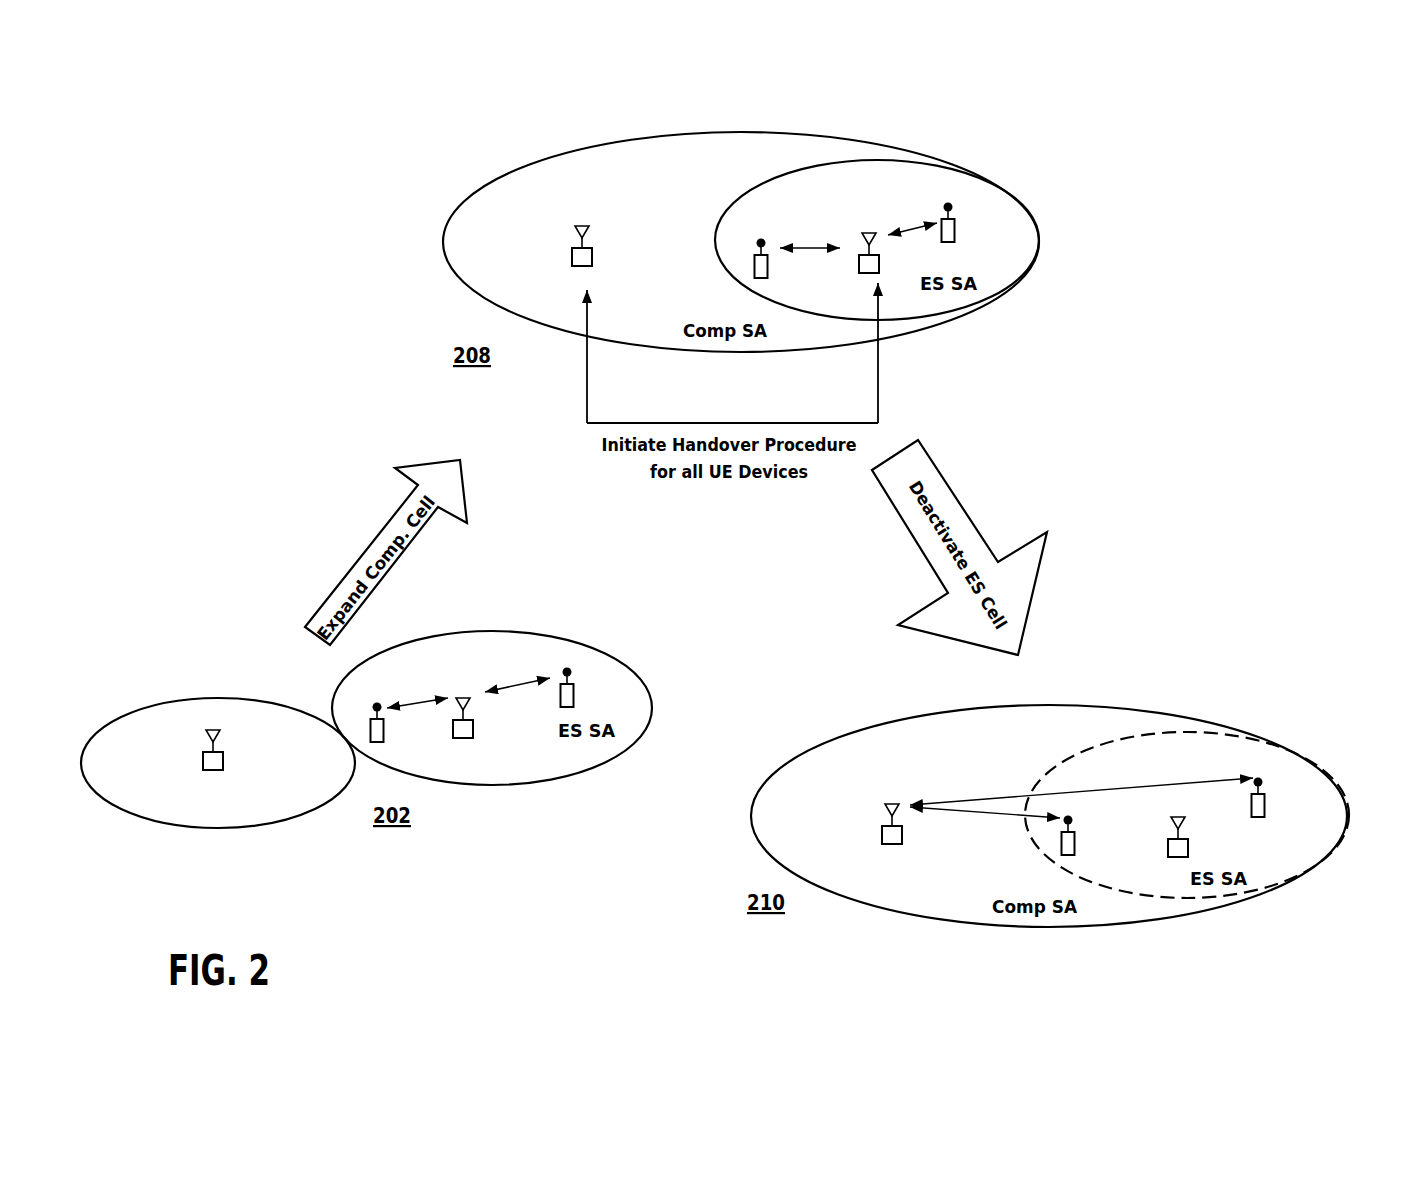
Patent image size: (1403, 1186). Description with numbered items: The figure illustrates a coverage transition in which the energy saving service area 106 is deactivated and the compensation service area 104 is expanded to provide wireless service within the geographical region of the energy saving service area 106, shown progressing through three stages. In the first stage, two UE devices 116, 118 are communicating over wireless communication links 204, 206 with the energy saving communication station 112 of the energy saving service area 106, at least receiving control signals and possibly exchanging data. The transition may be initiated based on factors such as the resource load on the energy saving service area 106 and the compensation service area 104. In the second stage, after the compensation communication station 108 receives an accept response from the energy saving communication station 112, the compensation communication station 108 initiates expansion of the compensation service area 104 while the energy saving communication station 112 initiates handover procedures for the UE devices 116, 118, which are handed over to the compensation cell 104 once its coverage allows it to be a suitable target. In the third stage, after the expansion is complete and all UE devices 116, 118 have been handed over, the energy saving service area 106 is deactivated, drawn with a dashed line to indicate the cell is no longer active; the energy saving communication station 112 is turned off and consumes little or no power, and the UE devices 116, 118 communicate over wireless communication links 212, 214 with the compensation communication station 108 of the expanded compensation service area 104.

The compensation service area 104 is at (470, 194).
The energy saving service area 106 is at (864, 157).
The compensation communication station 108 is at (593, 266).
The energy saving communication station 112 is at (878, 259).
The UE device 116 is at (956, 227).
The UE device 118 is at (767, 276).
The wireless communication link 204 is at (905, 225).
The wireless communication link 206 is at (815, 237).
The wireless communication link 212 is at (1100, 789).
The wireless communication link 214 is at (947, 812).